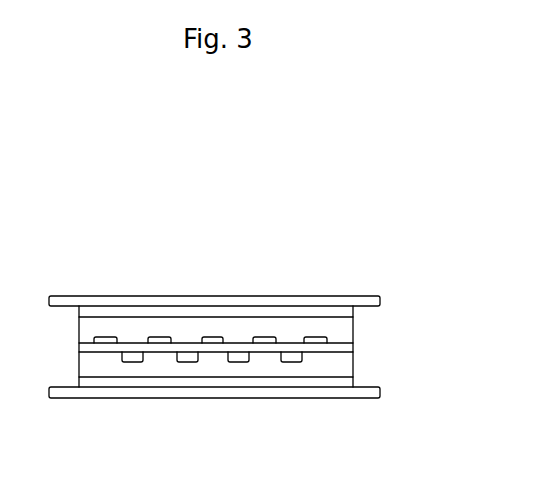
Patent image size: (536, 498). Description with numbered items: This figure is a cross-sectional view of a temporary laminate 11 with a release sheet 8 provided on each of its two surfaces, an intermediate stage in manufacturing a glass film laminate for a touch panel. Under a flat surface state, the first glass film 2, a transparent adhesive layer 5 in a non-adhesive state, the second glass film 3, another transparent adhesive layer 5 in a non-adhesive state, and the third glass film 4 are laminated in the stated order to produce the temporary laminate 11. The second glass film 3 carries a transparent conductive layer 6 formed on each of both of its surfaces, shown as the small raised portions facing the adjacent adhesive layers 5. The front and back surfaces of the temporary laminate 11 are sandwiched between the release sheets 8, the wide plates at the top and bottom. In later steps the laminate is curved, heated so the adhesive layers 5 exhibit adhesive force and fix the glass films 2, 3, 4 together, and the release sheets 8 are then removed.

The first glass film 2 is at (355, 379).
The second glass film 3 is at (355, 345).
The third glass film 4 is at (355, 311).
The transparent adhesive layer 5 is at (355, 326).
The transparent conductive layer 6 is at (318, 337).
The release sheet 8 is at (380, 296).
The temporary laminate 11 is at (278, 346).